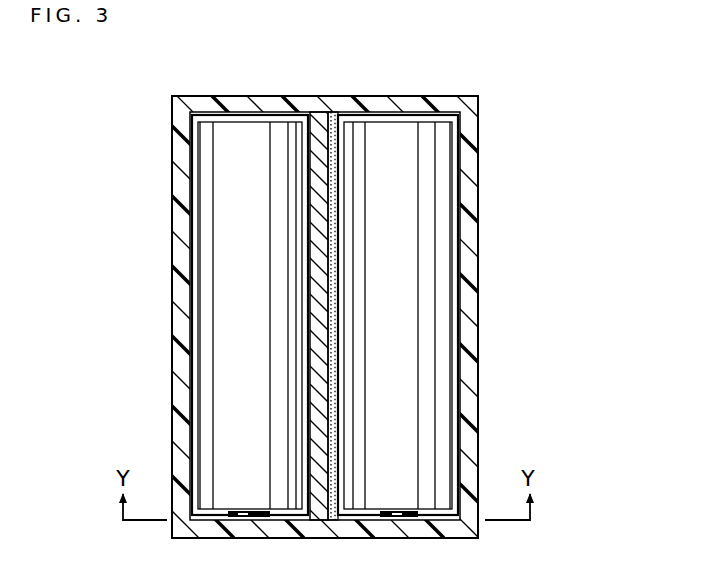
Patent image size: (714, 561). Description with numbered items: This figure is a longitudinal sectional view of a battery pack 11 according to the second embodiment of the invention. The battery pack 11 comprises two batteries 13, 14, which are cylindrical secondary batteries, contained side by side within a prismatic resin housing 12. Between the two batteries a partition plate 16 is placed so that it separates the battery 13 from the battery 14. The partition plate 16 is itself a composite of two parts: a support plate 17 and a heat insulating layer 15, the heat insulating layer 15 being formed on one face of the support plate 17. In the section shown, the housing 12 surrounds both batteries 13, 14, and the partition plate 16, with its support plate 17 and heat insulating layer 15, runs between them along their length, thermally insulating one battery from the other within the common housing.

The battery pack 11 is at (266, 86).
The prismatic resin housing 12 is at (372, 106).
The battery 13 is at (228, 229).
The battery 14 is at (405, 237).
The heat insulating layer 15 is at (335, 334).
The partition plate 16 is at (453, 312).
The support plate 17 is at (335, 392).